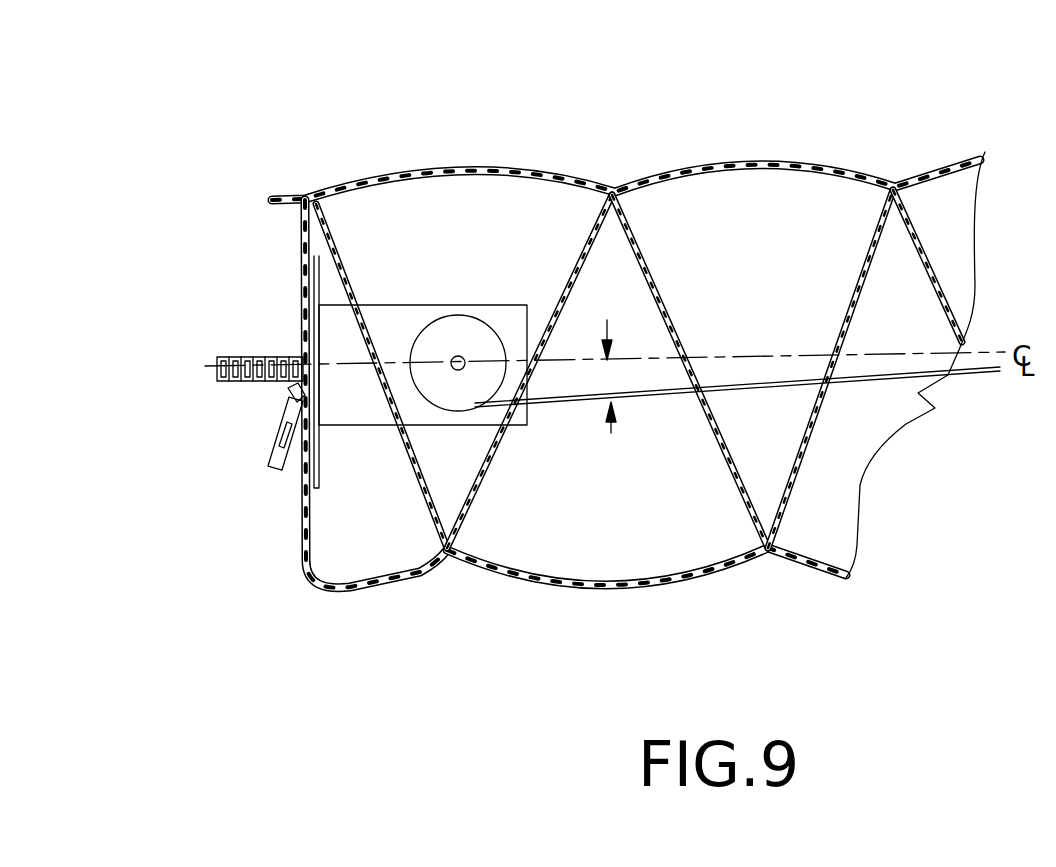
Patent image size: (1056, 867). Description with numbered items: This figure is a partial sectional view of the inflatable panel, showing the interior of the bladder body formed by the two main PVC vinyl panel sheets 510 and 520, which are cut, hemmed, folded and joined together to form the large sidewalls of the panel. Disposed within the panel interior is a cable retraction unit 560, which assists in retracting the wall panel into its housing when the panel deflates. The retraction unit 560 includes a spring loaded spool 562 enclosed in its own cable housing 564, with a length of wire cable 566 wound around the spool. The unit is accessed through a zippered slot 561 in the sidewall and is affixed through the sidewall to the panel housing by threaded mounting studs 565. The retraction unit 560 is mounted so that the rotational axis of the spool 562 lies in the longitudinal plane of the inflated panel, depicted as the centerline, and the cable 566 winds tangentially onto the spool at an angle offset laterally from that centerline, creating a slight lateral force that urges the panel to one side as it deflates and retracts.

The panel sheet 510 is at (528, 579).
The panel sheet 520 is at (403, 170).
The cable retraction unit 560 is at (445, 219).
The zippered slot 561 is at (293, 386).
The spring loaded spool 562 is at (473, 314).
The cable housing 564 is at (382, 305).
The threaded mounting stud 565 is at (245, 357).
The wire cable 566 is at (657, 407).